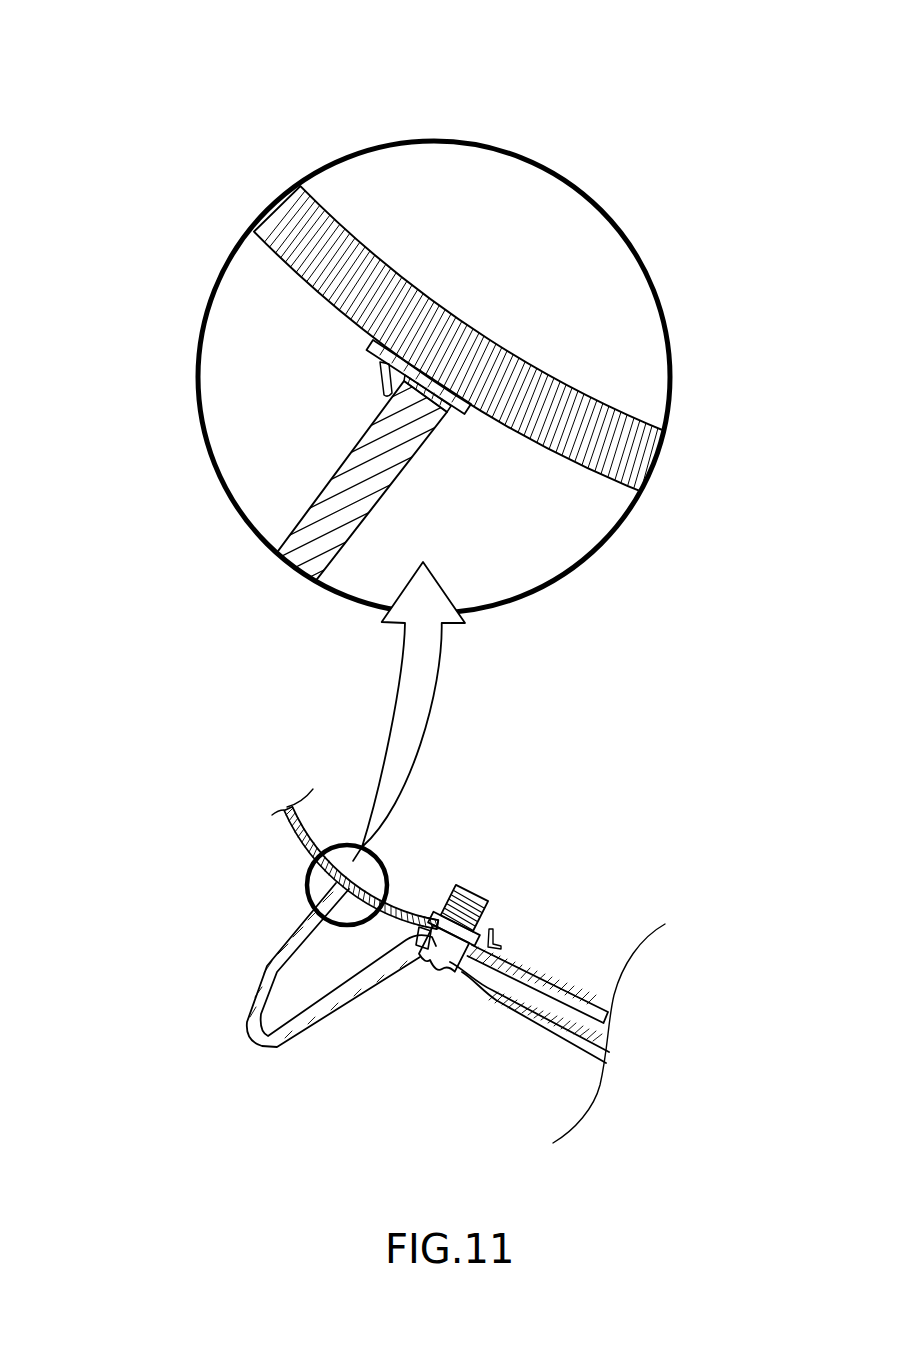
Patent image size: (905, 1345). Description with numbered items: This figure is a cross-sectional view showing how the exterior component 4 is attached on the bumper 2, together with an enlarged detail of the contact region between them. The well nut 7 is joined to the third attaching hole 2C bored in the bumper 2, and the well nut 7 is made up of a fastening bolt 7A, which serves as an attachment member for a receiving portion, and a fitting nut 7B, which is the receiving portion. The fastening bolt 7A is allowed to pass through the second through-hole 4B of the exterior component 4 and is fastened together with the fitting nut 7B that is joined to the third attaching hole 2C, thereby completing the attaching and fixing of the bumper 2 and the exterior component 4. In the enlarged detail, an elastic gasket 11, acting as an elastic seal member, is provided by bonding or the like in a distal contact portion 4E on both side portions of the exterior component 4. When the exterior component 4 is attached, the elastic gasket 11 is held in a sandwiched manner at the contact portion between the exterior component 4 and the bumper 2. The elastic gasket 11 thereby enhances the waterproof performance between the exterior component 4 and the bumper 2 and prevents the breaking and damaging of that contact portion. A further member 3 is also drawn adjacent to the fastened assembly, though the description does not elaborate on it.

The bumper 2 is at (365, 247).
The third attaching hole 2C is at (426, 928).
The vehicle body member 3 is at (518, 958).
The exterior component 4 is at (305, 511).
The second through-hole 4B is at (427, 957).
The distal contact portion 4E is at (437, 413).
The well nut 7 is at (486, 877).
The fastening bolt 7A is at (447, 972).
The fitting nut 7B is at (496, 934).
The elastic gasket 11 is at (386, 371).